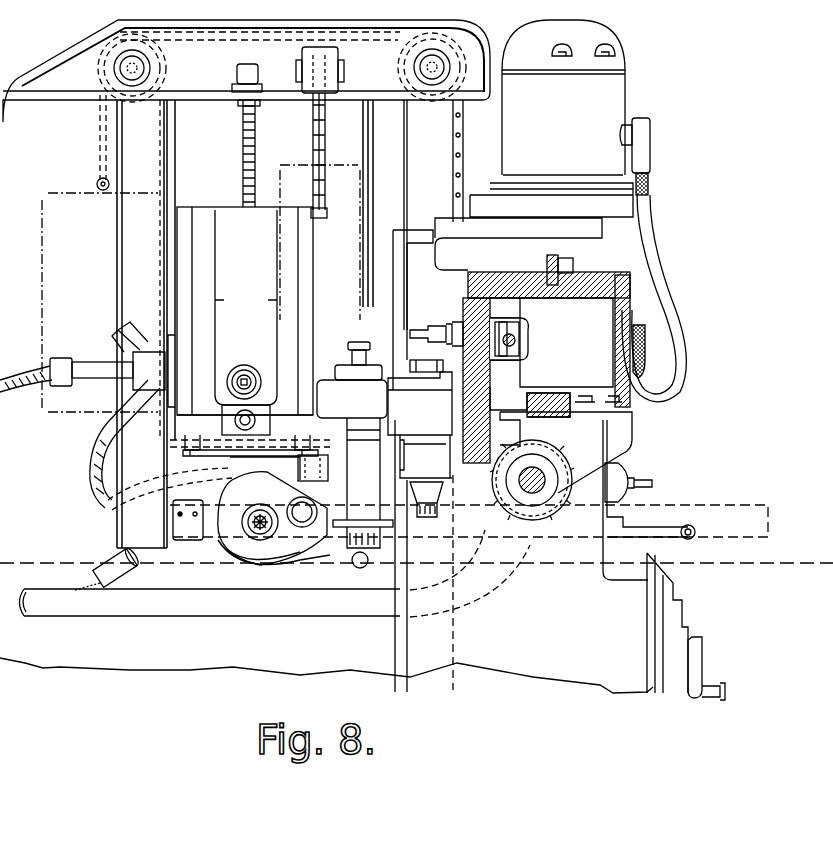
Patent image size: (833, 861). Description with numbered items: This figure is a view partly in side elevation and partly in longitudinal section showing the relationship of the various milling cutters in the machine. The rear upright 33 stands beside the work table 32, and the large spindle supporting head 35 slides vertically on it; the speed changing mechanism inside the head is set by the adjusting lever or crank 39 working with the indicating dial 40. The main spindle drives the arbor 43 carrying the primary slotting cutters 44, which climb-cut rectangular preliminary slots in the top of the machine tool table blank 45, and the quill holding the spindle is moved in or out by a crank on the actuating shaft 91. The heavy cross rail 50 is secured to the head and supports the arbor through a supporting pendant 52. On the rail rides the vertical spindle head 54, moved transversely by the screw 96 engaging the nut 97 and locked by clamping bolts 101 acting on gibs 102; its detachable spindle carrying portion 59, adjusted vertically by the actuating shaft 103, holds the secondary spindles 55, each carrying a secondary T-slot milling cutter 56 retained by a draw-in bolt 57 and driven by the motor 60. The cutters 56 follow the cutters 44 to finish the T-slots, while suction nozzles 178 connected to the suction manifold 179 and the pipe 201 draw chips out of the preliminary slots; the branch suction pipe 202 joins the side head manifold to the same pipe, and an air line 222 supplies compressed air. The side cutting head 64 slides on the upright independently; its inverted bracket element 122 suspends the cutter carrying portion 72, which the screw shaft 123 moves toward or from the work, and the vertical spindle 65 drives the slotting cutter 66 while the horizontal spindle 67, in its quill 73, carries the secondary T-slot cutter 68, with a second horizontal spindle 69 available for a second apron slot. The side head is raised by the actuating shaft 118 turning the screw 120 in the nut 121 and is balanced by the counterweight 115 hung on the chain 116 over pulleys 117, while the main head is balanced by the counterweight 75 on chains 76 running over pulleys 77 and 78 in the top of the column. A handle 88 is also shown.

The rear upright 33 is at (95, 50).
The pulleys 77 is at (168, 70).
The pulleys 78 is at (405, 63).
The chains 76 is at (100, 136).
The counterweight 75 is at (52, 190).
The screw 120 is at (243, 140).
The nut 121 is at (240, 70).
The pulleys 117 is at (302, 62).
The chain 116 is at (326, 148).
The counterweight 115 is at (303, 165).
The side cutting head 64 is at (210, 205).
The inverted bracket element 122 is at (203, 272).
The actuating shaft 118 is at (244, 365).
The screw shaft 123 is at (236, 416).
The air line 222 is at (98, 370).
The cutter carrying portion 72 is at (170, 478).
The quills 73 is at (296, 462).
The horizontal spindle 67 is at (262, 508).
The second horizontal spindle 69 is at (303, 498).
The secondary T-slot cutter 68 is at (280, 550).
The vertical spindle 65 is at (345, 468).
The slotting cutter 66 is at (338, 556).
The vertical spindle head 54 is at (475, 272).
The screw 96 is at (515, 333).
The nut 97 is at (530, 350).
The gibs 102 is at (548, 292).
The clamping bolts 101 is at (575, 262).
The actuating shaft 103 is at (432, 326).
The draw-in bolt 57 is at (432, 360).
The spindle carrying portion 59 is at (396, 383).
The suction manifold 179 is at (434, 445).
The secondary spindles 55 is at (426, 478).
The secondary T-slot milling cutter 56 is at (436, 520).
The motor 60 is at (618, 90).
The cross rail 50 is at (628, 298).
The arbor 43 is at (548, 508).
The supporting pendants 52 is at (620, 433).
The actuating shaft 91 is at (648, 472).
The primary slotting cutters 44 is at (548, 555).
The ball handle 88 is at (688, 524).
The machine tool table blank 45 is at (756, 505).
The work table 32 is at (775, 562).
The indicating dial 40 is at (676, 590).
The adjusting lever or crank 39 is at (703, 662).
The suction nozzles 178 is at (480, 560).
The pipe 201 is at (270, 618).
The branch suction pipe 202 is at (108, 558).
The spindle supporting head 35 is at (520, 680).